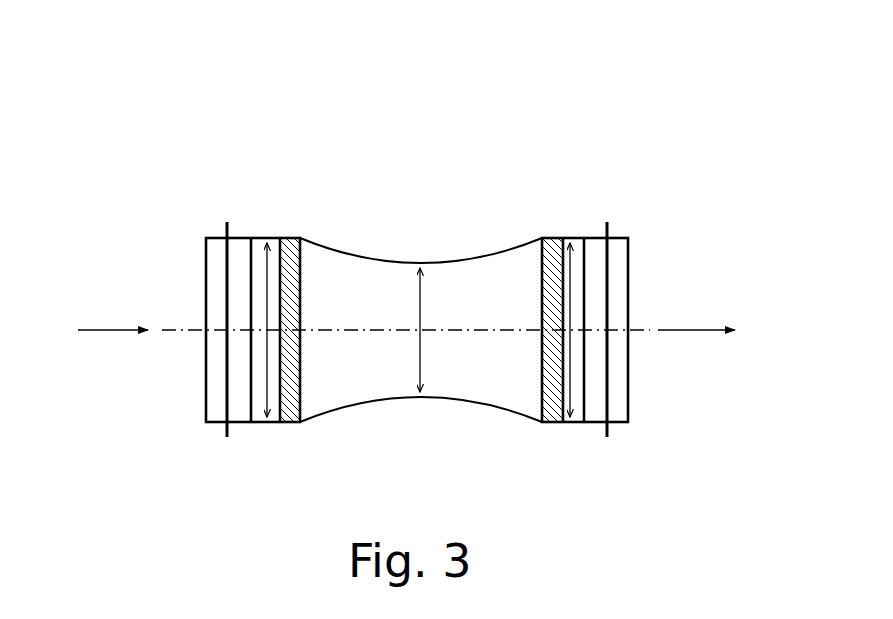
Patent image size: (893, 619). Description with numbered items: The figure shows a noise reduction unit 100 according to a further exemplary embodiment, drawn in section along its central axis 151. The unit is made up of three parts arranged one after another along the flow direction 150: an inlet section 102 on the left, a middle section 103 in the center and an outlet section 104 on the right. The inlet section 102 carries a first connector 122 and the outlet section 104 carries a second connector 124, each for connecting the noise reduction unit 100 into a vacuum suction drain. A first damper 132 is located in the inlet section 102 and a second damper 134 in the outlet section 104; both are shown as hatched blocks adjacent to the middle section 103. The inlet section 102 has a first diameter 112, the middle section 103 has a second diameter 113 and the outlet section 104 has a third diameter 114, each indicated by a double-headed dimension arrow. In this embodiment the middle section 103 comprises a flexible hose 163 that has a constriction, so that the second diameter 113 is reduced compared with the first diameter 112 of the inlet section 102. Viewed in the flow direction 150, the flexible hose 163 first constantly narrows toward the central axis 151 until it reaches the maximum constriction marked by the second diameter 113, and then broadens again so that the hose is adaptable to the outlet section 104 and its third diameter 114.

The noise reduction unit 100 is at (236, 92).
The inlet section 102 is at (259, 236).
The middle section 103 is at (383, 262).
The outlet section 104 is at (578, 236).
The first diameter 112 is at (267, 365).
The second diameter 113 is at (432, 358).
The third diameter 114 is at (572, 368).
The first connector 122 is at (228, 222).
The second connector 124 is at (595, 236).
The first damper 132 is at (291, 256).
The second damper 134 is at (552, 406).
The flow direction 150 is at (113, 329).
The central axis 151 is at (170, 334).
The flexible hose 163 is at (458, 238).